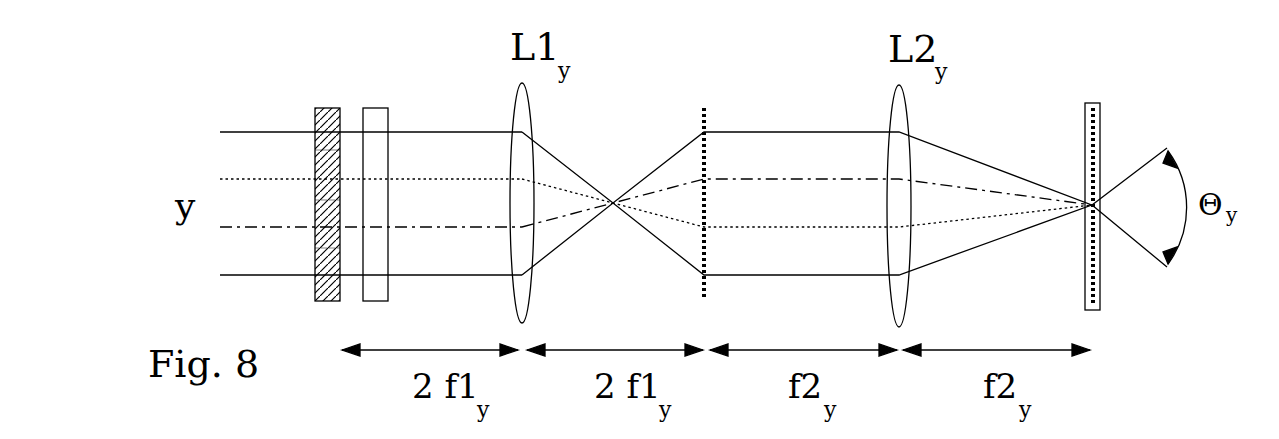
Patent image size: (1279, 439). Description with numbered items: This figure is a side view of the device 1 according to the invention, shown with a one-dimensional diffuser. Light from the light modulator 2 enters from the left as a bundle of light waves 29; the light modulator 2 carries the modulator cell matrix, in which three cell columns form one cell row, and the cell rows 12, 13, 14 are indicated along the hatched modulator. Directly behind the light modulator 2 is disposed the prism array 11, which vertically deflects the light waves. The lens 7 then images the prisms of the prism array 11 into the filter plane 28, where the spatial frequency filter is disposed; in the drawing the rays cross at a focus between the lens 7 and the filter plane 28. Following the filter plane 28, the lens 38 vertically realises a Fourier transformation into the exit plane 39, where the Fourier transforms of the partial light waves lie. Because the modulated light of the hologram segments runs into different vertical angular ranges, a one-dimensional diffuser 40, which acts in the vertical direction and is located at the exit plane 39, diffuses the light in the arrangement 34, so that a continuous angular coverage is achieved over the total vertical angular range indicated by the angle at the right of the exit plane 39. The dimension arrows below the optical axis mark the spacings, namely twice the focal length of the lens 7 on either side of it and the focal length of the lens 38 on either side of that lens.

The laser beam shaping system 1 is at (628, 57).
The light modulator 2 is at (323, 120).
The lens 7 is at (522, 313).
The prism array 11 is at (377, 125).
The cell row 12 is at (343, 160).
The cell row 13 is at (343, 208).
The cell row 14 is at (343, 255).
The filter plane 28 is at (706, 113).
The laser beams 29 is at (252, 133).
The arrangement 34 is at (1012, 91).
The lens 38 is at (903, 100).
The exit plane 39 is at (1093, 283).
The one-dimensional diffuser 40 is at (1098, 120).